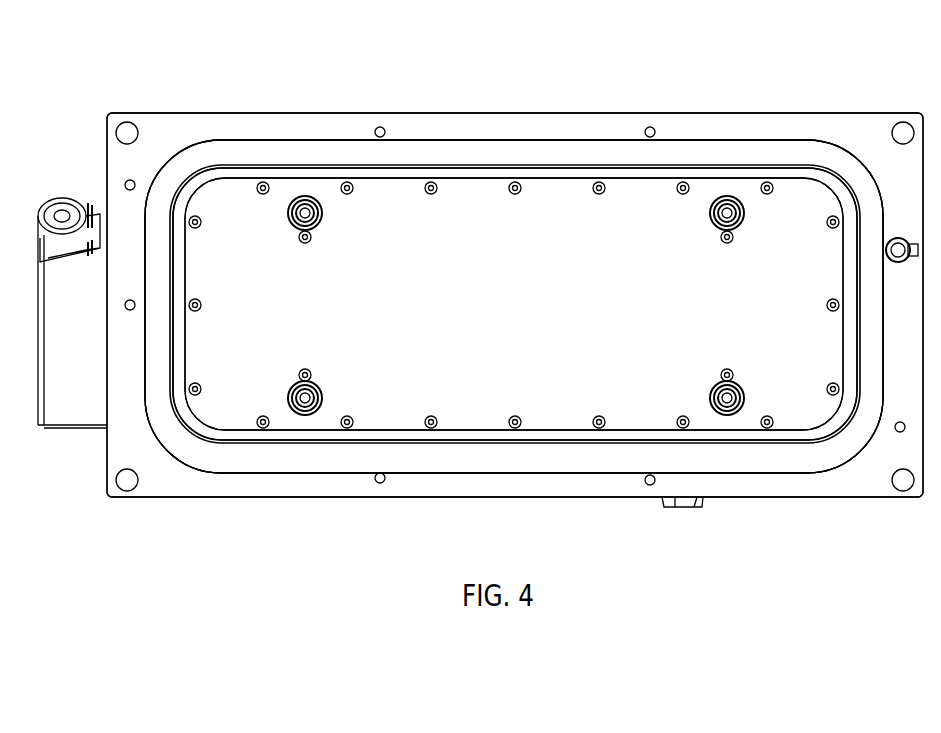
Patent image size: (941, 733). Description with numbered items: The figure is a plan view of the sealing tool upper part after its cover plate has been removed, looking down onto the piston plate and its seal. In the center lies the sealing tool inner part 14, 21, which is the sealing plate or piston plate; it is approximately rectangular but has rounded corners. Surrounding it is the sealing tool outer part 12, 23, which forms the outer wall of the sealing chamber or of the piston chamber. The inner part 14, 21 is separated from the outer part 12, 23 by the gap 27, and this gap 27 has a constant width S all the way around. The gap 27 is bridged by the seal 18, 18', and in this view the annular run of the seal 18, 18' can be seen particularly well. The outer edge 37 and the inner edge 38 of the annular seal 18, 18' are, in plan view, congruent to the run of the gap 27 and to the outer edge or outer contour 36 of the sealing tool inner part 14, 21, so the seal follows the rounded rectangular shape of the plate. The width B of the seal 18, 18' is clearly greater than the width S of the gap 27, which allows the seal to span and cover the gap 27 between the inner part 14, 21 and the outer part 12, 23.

The sealing tool outer part 12 is at (600, 128).
The sealing tool outer part 23 is at (514, 306).
The sealing tool inner part 14 is at (483, 318).
The sealing tool inner part 21 is at (514, 304).
The seal 18 is at (515, 285).
The seal 18' is at (515, 305).
The gap 27 is at (452, 165).
The outer contour 36 is at (627, 168).
The outer edge 37 is at (697, 165).
The inner edge 38 is at (703, 183).
The width of the gap S is at (557, 133).
The width of the seal B is at (892, 338).